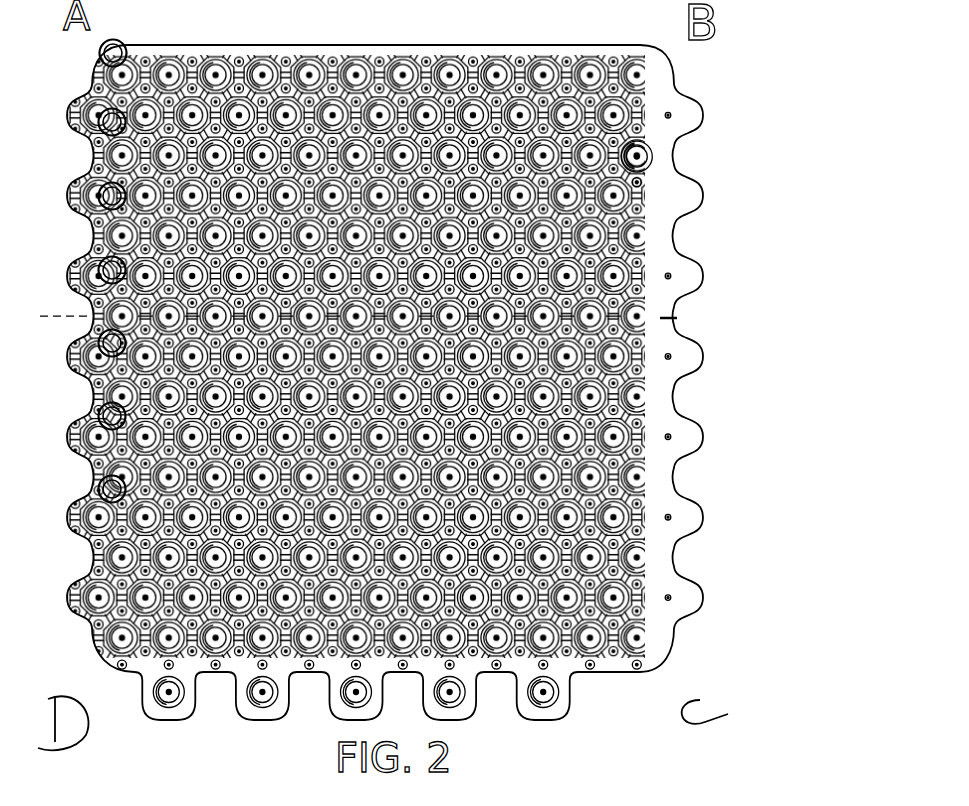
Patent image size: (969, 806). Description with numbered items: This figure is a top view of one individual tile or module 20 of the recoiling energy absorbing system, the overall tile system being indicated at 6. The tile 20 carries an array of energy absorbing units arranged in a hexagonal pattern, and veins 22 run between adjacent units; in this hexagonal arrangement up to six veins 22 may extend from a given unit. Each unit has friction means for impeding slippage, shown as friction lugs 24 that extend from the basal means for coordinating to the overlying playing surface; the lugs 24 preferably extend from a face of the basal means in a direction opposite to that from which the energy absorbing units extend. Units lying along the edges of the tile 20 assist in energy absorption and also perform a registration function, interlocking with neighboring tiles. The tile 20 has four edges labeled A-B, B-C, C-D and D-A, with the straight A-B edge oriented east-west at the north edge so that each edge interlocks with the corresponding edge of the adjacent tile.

The panel 6 is at (653, 333).
The tile or module 20 is at (652, 108).
The veins 22 is at (652, 193).
The friction lugs 24 is at (650, 148).